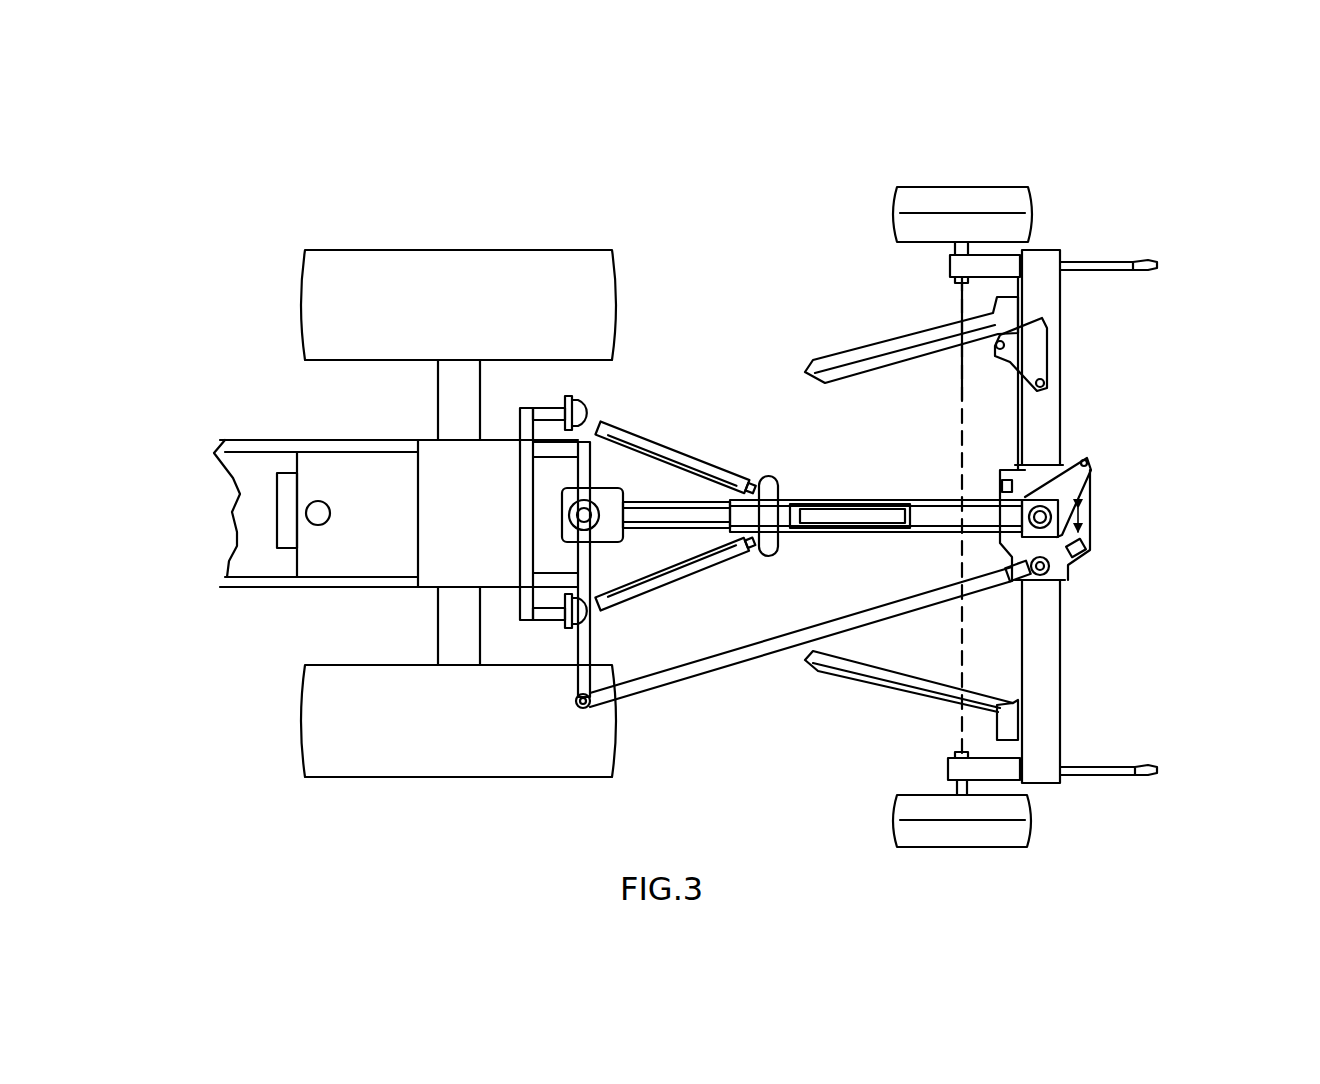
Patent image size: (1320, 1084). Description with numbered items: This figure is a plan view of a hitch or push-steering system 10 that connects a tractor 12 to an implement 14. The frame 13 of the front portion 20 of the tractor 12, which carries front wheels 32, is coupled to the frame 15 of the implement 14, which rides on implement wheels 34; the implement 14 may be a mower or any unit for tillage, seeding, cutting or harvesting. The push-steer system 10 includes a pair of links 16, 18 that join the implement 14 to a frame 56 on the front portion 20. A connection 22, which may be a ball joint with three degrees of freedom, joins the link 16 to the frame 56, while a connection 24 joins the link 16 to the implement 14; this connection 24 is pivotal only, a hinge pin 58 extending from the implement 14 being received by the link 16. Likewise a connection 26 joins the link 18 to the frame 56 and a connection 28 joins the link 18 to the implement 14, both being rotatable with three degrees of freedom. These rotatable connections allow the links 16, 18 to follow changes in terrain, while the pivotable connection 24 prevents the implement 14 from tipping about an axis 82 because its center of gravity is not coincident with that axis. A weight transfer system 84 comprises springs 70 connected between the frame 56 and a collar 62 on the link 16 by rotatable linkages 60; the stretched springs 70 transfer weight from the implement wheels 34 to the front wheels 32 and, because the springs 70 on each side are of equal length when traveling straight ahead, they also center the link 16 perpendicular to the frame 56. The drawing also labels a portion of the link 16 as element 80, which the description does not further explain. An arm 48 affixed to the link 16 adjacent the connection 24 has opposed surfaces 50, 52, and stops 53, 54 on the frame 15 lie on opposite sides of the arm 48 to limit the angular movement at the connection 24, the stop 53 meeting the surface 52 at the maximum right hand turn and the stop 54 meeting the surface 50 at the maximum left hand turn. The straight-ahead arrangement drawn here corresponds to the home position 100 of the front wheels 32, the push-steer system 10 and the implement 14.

The home position 100 is at (658, 200).
The push-steering system 10 is at (736, 345).
The tractor 12 is at (275, 440).
The frame 13 is at (230, 440).
The implement 14 is at (1048, 502).
The frame 15 is at (1055, 665).
The link 16 is at (822, 488).
The link 18 is at (815, 691).
The front portion 20 is at (641, 522).
The connection 22 is at (568, 520).
The connection 24 is at (1052, 518).
The connection 26 is at (578, 712).
The connection 28 is at (1055, 578).
The front wheels 32 is at (483, 250).
The implement wheels 34 is at (1031, 200).
The arm 48 is at (1090, 462).
The surface 50 is at (1098, 495).
The surface 52 is at (1047, 465).
The stop 53 is at (1005, 483).
The stop 54 is at (1090, 550).
The frame 56 is at (522, 489).
The hinge pin 58 is at (1030, 510).
The rotatable linkages 60 is at (593, 403).
The collar 62 is at (790, 502).
The springs 70 is at (700, 445).
The telescoping rod 80 is at (900, 500).
The axis 82 is at (960, 656).
The weight transfer system 84 is at (712, 632).